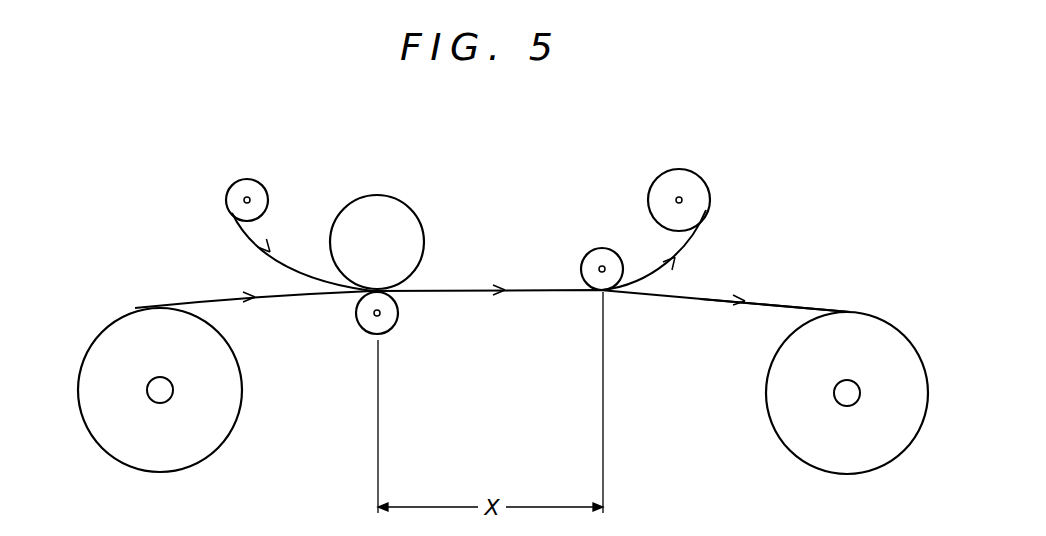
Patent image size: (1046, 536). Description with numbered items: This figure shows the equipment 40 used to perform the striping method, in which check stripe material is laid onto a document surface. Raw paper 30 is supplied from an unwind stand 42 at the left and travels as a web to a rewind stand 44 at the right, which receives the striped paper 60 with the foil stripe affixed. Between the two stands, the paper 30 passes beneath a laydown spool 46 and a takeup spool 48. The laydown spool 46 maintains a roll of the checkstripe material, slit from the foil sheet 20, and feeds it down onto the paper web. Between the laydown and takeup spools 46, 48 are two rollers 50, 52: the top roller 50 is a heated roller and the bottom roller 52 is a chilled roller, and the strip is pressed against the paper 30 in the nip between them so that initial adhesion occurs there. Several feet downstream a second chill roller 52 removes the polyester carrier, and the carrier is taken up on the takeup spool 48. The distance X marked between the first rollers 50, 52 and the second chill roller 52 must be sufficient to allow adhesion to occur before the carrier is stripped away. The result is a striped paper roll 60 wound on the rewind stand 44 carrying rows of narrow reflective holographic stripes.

The foil sheet 20 is at (264, 190).
The paper 30 is at (230, 297).
The equipment 40 is at (750, 143).
The unwind stand 42 is at (160, 455).
The rewind stand 44 is at (822, 457).
The laydown spool 46 is at (214, 197).
The takeup spool 48 is at (721, 191).
The top roller 50 is at (382, 231).
The bottom roller 52 is at (345, 333).
The striped paper 60 is at (773, 300).